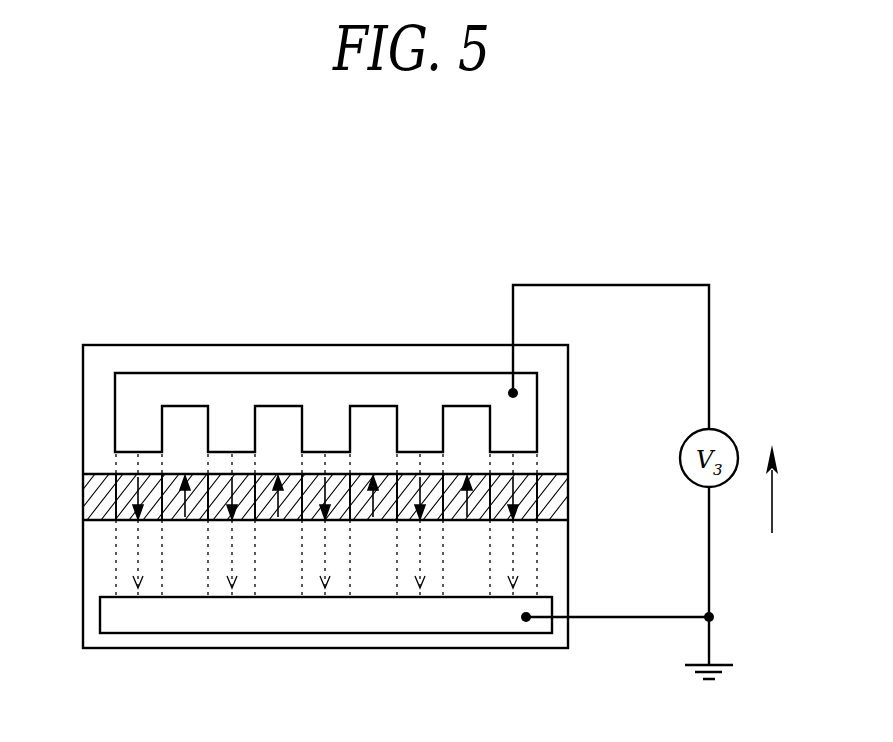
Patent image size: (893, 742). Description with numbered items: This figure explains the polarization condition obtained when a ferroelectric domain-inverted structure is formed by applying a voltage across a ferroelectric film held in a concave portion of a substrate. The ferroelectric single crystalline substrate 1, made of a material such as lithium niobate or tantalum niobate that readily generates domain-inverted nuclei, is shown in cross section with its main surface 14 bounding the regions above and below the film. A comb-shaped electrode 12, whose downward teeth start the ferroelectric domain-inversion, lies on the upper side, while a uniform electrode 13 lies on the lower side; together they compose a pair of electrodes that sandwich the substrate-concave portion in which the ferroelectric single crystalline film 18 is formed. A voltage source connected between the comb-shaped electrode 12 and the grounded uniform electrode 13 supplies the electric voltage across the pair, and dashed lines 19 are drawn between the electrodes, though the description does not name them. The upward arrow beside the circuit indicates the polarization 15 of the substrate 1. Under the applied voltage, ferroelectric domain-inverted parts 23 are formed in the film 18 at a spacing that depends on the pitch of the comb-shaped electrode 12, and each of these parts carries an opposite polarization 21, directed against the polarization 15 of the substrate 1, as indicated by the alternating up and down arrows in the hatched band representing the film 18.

The ferroelectric single crystalline substrate 1 is at (568, 383).
The comb-shaped electrode 12 is at (138, 396).
The uniform electrode 13 is at (500, 620).
The main surface 14 is at (550, 452).
The polarization 15 is at (775, 513).
The ferroelectric single crystalline film 18 is at (90, 483).
The electric field lines 19 is at (186, 508).
The opposite polarization 21 is at (115, 500).
The ferroelectric domain-inverted parts 23 is at (120, 492).